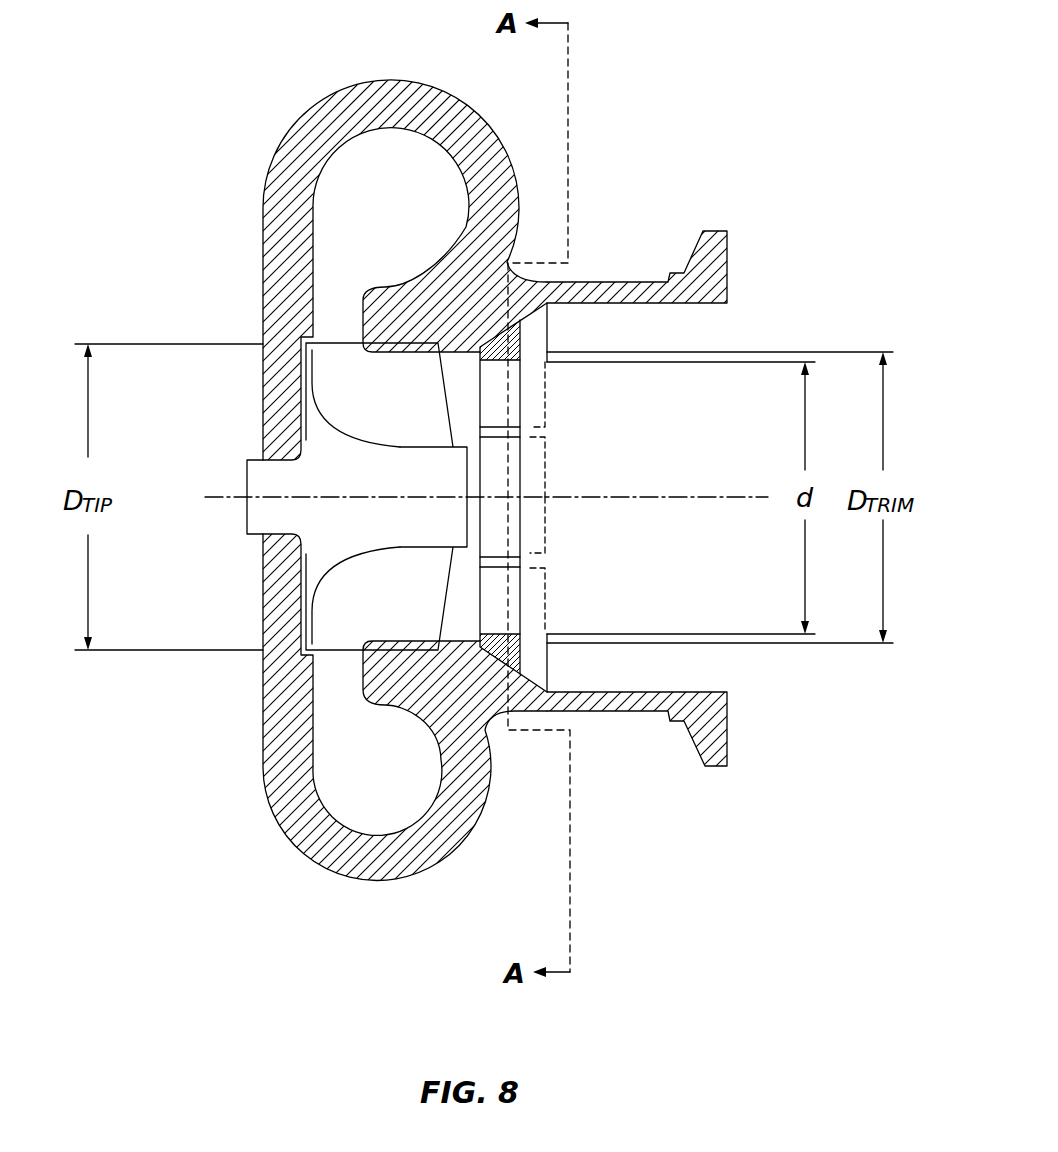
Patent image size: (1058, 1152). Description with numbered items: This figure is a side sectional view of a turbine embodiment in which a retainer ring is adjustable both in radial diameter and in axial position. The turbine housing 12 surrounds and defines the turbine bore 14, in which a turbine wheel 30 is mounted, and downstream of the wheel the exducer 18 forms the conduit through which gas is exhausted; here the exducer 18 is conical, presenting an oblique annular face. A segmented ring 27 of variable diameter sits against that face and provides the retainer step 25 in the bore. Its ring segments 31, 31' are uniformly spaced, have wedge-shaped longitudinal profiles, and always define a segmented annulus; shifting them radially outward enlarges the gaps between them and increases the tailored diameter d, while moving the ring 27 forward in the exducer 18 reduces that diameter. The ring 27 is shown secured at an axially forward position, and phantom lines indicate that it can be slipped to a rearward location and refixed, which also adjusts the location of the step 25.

The turbine housing 12 is at (450, 104).
The turbine bore 14 is at (470, 405).
The exducer 18 is at (718, 667).
The step 25 is at (480, 636).
The segmented ring 27 is at (518, 638).
The turbine wheel 30 is at (328, 377).
The ring segment 31 is at (536, 540).
The ring segment 31' is at (540, 429).